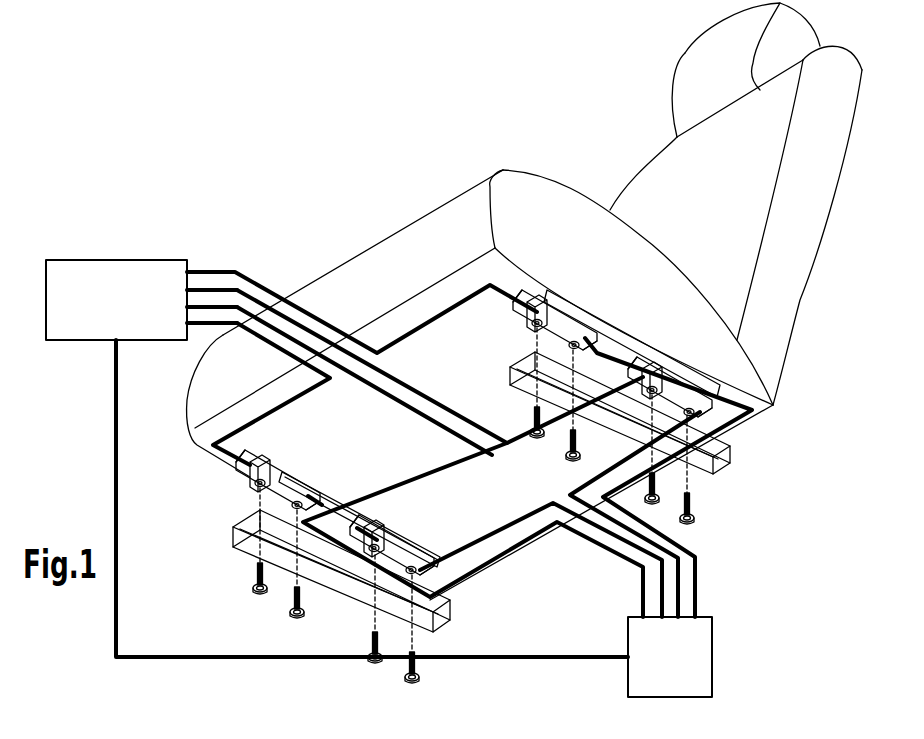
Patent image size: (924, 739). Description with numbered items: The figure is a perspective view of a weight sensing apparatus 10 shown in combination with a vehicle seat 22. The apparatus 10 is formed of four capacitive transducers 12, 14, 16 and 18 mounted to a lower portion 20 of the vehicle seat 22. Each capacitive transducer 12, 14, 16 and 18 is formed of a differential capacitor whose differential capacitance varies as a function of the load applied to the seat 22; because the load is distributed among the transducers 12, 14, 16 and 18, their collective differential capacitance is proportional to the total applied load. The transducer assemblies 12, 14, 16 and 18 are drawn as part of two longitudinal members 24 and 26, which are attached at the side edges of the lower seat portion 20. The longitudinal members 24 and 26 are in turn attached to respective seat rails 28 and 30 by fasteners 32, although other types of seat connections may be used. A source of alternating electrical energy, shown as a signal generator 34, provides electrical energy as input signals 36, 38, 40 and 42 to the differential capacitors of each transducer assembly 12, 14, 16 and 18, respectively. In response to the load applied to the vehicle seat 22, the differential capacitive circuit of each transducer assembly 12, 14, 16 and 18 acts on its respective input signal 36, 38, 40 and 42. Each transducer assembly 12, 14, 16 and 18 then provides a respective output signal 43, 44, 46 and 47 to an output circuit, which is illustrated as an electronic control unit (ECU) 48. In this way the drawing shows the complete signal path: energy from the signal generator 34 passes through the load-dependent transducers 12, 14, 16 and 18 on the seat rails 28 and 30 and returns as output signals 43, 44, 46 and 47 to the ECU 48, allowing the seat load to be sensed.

The weight sensing apparatus 10 is at (765, 481).
The capacitive transducer 12 is at (286, 486).
The capacitive transducer 14 is at (556, 312).
The capacitive transducer 16 is at (678, 392).
The capacitive transducer 18 is at (395, 552).
The lower portion 20 is at (346, 472).
The vehicle seat 22 is at (840, 213).
The longitudinal member 24 is at (342, 502).
The longitudinal member 26 is at (604, 330).
The seat rail 28 is at (325, 588).
The seat rail 30 is at (712, 460).
The fastener 32 is at (568, 455).
The signal generator 34 is at (80, 260).
The input signal 36 is at (290, 398).
The input signal 38 is at (289, 302).
The input signal 40 is at (385, 388).
The input signal 42 is at (405, 406).
The output signal 43 is at (540, 533).
The output signal 44 is at (698, 590).
The output signal 46 is at (592, 478).
The output signal 47 is at (530, 516).
The electronic control unit (ECU) 48 is at (713, 660).